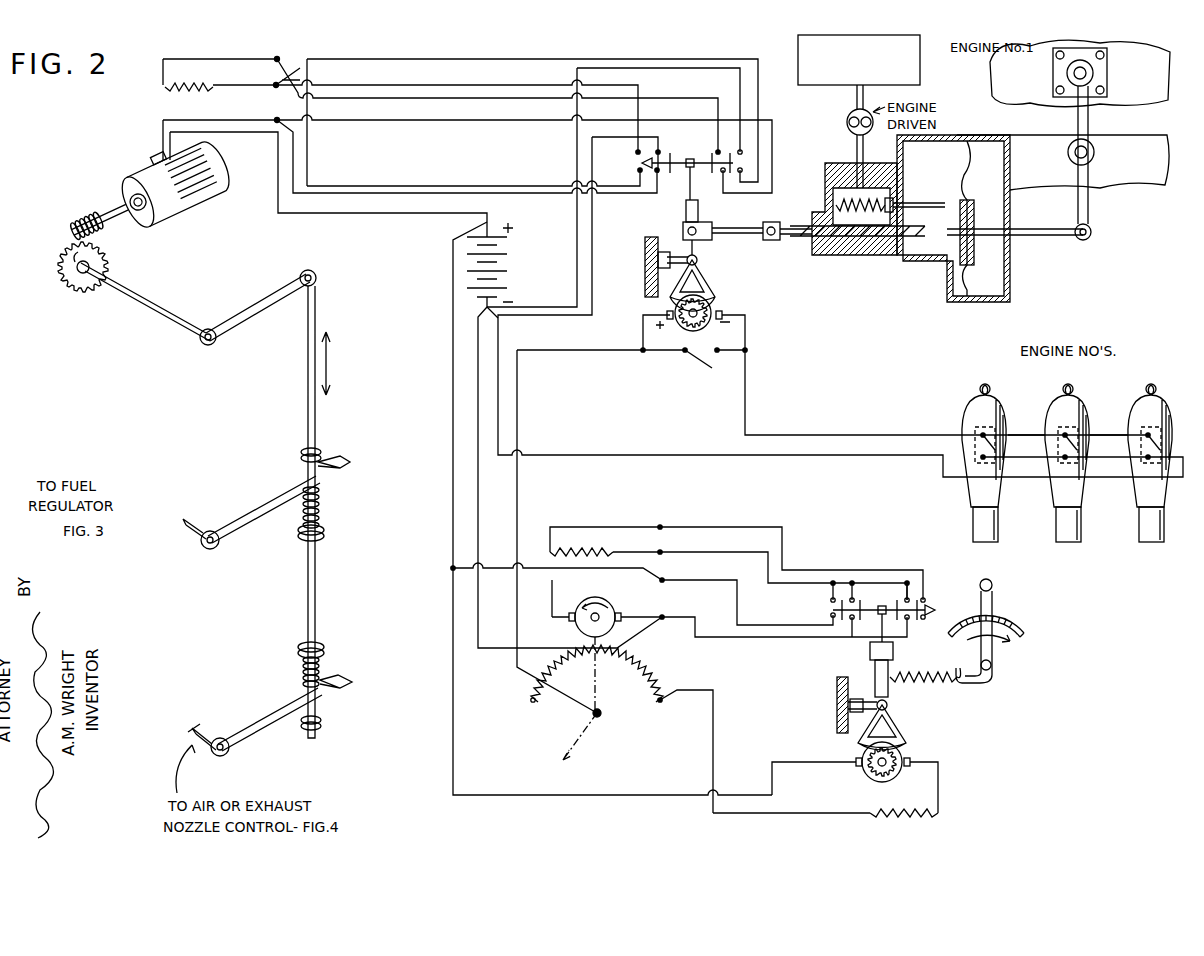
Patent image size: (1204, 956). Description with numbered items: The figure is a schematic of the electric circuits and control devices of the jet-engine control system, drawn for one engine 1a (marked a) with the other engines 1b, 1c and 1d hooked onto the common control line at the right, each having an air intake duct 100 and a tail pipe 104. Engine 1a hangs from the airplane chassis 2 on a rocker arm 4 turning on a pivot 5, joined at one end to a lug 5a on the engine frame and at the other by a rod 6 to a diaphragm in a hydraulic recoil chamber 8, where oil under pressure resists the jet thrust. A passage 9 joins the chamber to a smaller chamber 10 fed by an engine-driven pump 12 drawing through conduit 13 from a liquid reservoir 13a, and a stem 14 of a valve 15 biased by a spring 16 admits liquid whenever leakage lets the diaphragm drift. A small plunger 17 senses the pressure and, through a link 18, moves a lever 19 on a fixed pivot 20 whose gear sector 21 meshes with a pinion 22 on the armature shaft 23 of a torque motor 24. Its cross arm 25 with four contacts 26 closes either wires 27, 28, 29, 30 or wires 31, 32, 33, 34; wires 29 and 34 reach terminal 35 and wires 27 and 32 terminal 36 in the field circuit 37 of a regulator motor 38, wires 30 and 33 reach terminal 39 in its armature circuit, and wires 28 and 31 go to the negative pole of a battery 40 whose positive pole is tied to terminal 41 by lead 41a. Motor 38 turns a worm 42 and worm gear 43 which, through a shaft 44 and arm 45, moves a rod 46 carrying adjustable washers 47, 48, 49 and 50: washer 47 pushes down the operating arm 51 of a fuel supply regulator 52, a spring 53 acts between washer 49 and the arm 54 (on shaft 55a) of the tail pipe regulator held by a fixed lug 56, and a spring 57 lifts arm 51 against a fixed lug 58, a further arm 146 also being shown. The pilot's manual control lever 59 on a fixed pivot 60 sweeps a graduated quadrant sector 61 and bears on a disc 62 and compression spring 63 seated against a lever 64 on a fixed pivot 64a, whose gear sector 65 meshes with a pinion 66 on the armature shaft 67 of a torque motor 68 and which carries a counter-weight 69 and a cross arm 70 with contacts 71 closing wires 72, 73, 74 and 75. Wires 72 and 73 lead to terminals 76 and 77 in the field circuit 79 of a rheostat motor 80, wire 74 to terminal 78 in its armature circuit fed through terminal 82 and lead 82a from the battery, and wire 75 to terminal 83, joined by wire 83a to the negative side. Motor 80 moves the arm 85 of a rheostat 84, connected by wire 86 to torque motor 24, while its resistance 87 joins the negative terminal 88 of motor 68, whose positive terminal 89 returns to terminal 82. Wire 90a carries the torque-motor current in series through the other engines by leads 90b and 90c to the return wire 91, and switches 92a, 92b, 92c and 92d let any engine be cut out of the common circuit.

The jet engine 1a is at (1150, 82).
The engine designation a is at (1025, 58).
The jet engine 1b is at (984, 435).
The jet engine 1c is at (1067, 435).
The jet engine 1d is at (1150, 435).
The chassis 2 is at (1125, 140).
The rear rocker arm 4 is at (1076, 120).
The pivot 5 is at (1068, 156).
The lug 5a is at (1088, 72).
The rod 6 is at (1045, 236).
The hydraulic recoil chamber 8 is at (930, 235).
The passage 9 is at (882, 245).
The smaller chamber 10 is at (866, 185).
The liquid pump 12 is at (850, 130).
The conduit 13 is at (841, 99).
The liquid reservoir 13a is at (920, 65).
The valve stem 14 is at (928, 204).
The valve 15 is at (892, 192).
The spring 16 is at (826, 190).
The plunger 17 is at (834, 245).
The link 18 is at (740, 236).
The lever 19 is at (686, 212).
The fixed pivot 20 is at (698, 262).
The gear sector 21 is at (712, 292).
The toothed pinion 22 is at (650, 310).
The armature shaft 23 is at (698, 316).
The torque motor 24 is at (724, 312).
The cross arm 25 is at (704, 160).
The contacts 26 is at (640, 162).
The electric wire 27 is at (390, 59).
The electric wire 28 is at (740, 90).
The electric wire 29 is at (388, 99).
The electric wire 30 is at (388, 119).
The electric wire 31 is at (592, 290).
The electric wire 32 is at (388, 84).
The electric wire 33 is at (384, 194).
The electric wire 34 is at (370, 186).
The terminal 35 is at (277, 56).
The terminal 36 is at (276, 83).
The field circuit 37 is at (166, 90).
The regulator motor 38 is at (190, 196).
The terminal 39 is at (277, 118).
The battery 40 is at (508, 262).
The terminal 41 is at (290, 133).
The conductor 41a is at (398, 214).
The worm 42 is at (86, 226).
The worm gear 43 is at (85, 292).
The shaft 44 is at (162, 308).
The arm 45 is at (262, 298).
The rod 46 is at (306, 366).
The washer 47 is at (300, 450).
The washer 48 is at (326, 527).
The washer 49 is at (325, 644).
The washer 50 is at (330, 716).
The operating arm 51 is at (262, 523).
The fuel supply regulator 52 is at (183, 518).
The spring 53 is at (302, 666).
The arm 54 is at (278, 722).
The shaft 55a is at (205, 725).
The fixed lug 56 is at (350, 676).
The spring 57 is at (322, 512).
The fixed lug 58 is at (348, 458).
The lever 146 is at (205, 520).
The manual control lever 59 is at (994, 602).
The fixed pivot 60 is at (992, 665).
The quadrant sector 61 is at (1025, 628).
The disc 62 is at (957, 672).
The compression spring 63 is at (957, 682).
The lever 64 is at (876, 668).
The fixed pivot 64a is at (890, 704).
The gear sector 65 is at (905, 736).
The toothed pinion 66 is at (912, 758).
The armature shaft 67 is at (878, 764).
The torque motor 68 is at (854, 746).
The counter-weight 69 is at (868, 650).
The cross arm 70 is at (884, 615).
The contacts 71 is at (838, 604).
The electric wire 72 is at (926, 580).
The electric wire 73 is at (785, 580).
The electric wire 74 is at (800, 620).
The electric wire 75 is at (790, 630).
The terminal 76 is at (668, 527).
The terminal 77 is at (666, 553).
The terminal 78 is at (666, 581).
The field circuit 79 is at (550, 552).
The rheostat motor 80 is at (605, 600).
The terminal 82 is at (452, 568).
The conductor 82a is at (452, 435).
The terminal 83 is at (664, 620).
The wire 83a is at (478, 540).
The rheostat 84 is at (615, 722).
The rheostat arm 85 is at (585, 722).
The wire 86 is at (565, 355).
The resistance 87 is at (650, 745).
The negative terminal 88 is at (795, 815).
The positive terminal 89 is at (788, 762).
The wire 90a is at (808, 434).
The conductor 90b is at (1043, 460).
The conductor 90c is at (1126, 460).
The return wire 91 is at (822, 456).
The switch 92a is at (705, 365).
The switch 92b is at (998, 446).
The switch 92c is at (1082, 446).
The switch 92d is at (1162, 446).
The air intake duct 100 is at (1002, 376).
The tail pipe 104 is at (992, 545).